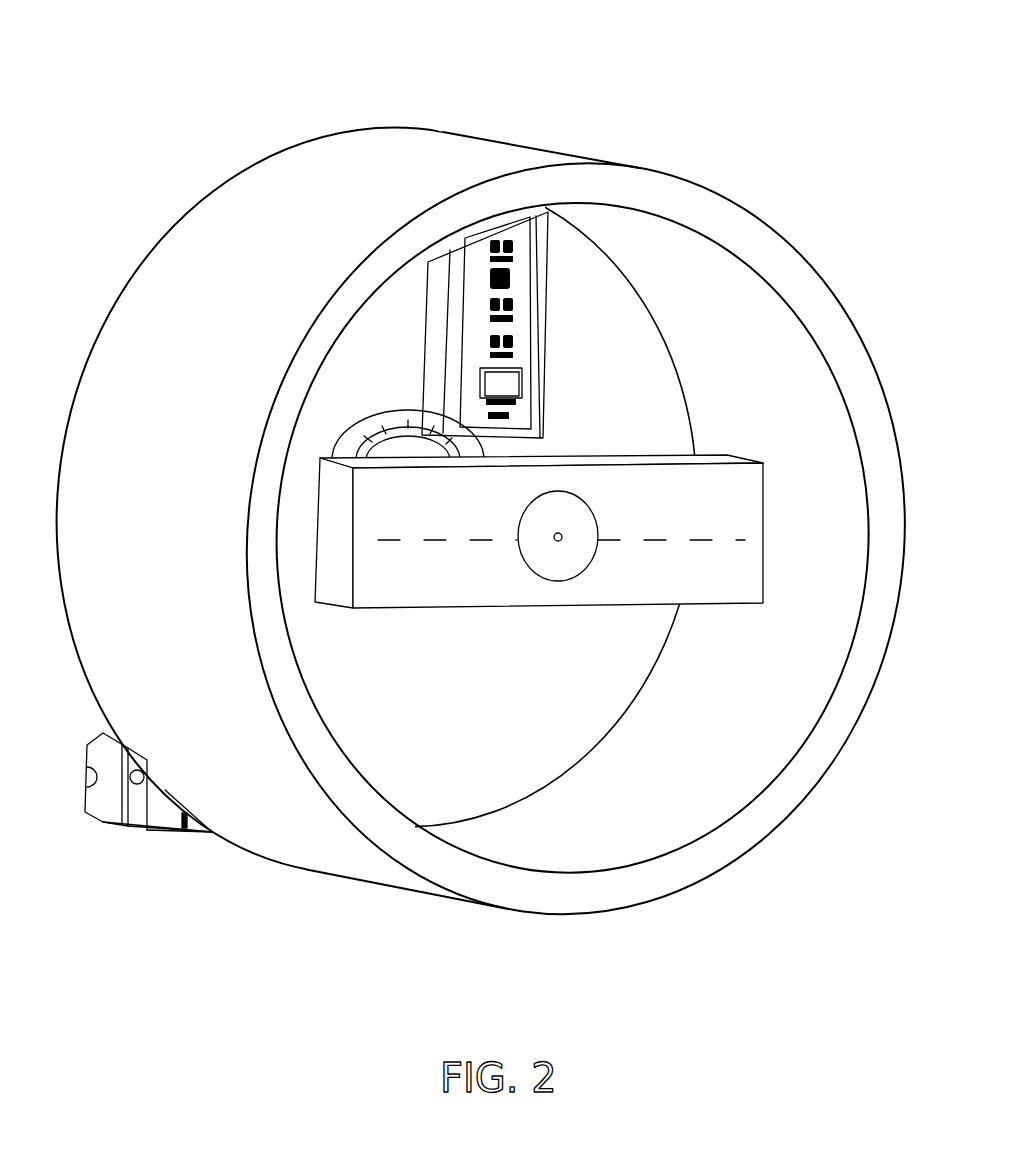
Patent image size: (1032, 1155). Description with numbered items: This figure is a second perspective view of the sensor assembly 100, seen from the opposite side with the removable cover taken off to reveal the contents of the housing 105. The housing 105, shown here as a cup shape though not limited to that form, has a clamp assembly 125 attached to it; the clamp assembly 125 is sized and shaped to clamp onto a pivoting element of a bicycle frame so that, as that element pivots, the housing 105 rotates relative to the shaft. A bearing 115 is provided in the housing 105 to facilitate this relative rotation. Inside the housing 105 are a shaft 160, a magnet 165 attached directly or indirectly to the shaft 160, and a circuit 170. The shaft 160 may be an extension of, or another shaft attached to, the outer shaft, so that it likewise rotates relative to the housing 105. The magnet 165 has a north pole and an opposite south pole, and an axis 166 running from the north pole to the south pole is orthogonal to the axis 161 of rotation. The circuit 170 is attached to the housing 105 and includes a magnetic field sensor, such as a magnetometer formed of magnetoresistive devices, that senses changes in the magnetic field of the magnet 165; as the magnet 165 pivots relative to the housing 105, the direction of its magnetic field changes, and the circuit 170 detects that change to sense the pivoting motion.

The sensor assembly 100 is at (132, 257).
The housing 105 is at (463, 160).
The bearing 115 is at (362, 435).
The clamp assembly 125 is at (153, 832).
The shaft 160 is at (568, 580).
The axis of rotation 161 is at (560, 537).
The magnet 165 is at (400, 570).
The axis 166 is at (473, 540).
The circuit 170 is at (537, 303).